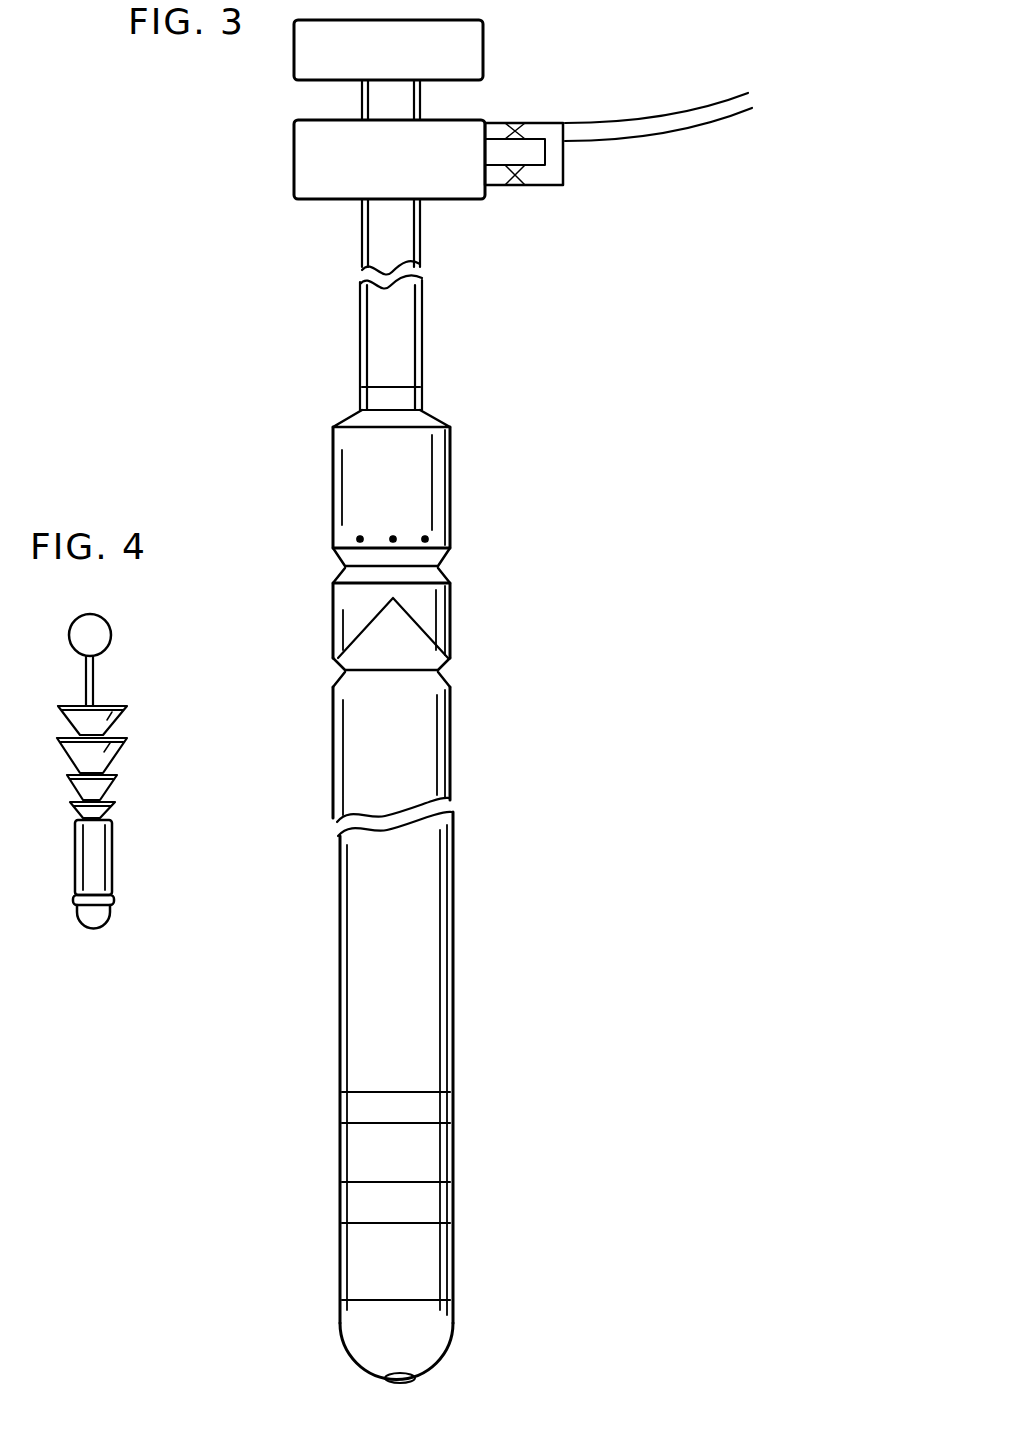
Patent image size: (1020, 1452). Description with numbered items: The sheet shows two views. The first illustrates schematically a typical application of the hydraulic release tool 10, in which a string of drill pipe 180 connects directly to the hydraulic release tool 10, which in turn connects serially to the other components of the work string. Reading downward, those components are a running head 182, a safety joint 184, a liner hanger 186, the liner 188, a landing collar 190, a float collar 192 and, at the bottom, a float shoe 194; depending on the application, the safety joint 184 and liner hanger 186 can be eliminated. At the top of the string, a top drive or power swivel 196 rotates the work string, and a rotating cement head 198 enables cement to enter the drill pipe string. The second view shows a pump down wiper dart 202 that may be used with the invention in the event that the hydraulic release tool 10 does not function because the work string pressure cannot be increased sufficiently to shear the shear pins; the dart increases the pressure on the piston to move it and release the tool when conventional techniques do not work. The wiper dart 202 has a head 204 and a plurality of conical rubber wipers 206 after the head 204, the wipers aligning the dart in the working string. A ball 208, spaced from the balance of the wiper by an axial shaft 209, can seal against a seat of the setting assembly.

In FIG. 3, the hydraulic release tool 10 is at (335, 401).
In FIG. 3, the drill pipe 180 is at (424, 353).
In FIG. 3, the running head 182 is at (345, 487).
In FIG. 3, the safety joint 184 is at (332, 533).
In FIG. 3, the liner hanger 186 is at (345, 622).
In FIG. 3, the liner 188 is at (432, 722).
In FIG. 3, the landing collar 190 is at (350, 1108).
In FIG. 3, the float collar 192 is at (352, 1208).
In FIG. 3, the float shoe 194 is at (425, 1357).
In FIG. 3, the top drive or power swivel 196 is at (485, 55).
In FIG. 3, the rotating cement head 198 is at (470, 133).
In FIG. 4, the wiper dart 202 is at (148, 778).
In FIG. 4, the head 204 is at (112, 872).
In FIG. 4, the conical rubber wipers 206 is at (120, 722).
In FIG. 4, the ball 208 is at (108, 632).
In FIG. 4, the axial shaft 209 is at (96, 681).